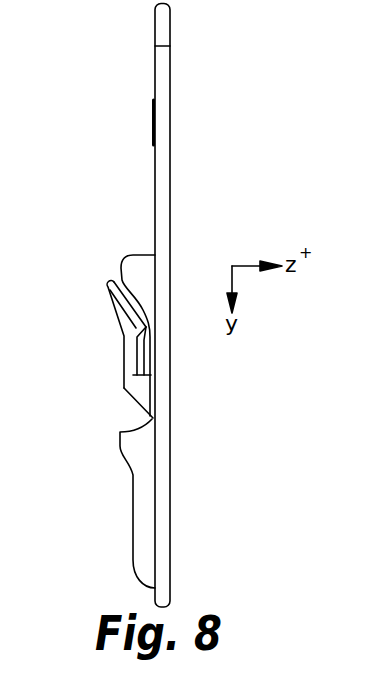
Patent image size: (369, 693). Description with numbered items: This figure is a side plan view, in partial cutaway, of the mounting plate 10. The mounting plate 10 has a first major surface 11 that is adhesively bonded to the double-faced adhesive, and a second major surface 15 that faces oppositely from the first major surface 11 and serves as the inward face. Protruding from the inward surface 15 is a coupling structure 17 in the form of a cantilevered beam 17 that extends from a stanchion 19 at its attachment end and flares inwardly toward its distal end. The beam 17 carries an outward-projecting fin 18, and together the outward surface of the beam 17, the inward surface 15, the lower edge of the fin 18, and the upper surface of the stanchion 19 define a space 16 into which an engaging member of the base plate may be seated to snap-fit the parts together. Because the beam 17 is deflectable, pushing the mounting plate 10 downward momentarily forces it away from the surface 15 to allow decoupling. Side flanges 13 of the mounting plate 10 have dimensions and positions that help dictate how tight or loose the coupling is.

The mounting plate 10 is at (128, 32).
The first major surface 11 is at (170, 127).
The side flanges 13 is at (137, 462).
The second major surface 15 is at (155, 170).
The space 16 is at (141, 360).
The coupling structure 17 is at (110, 283).
The fin 18 is at (139, 328).
The stanchion 19 is at (143, 398).